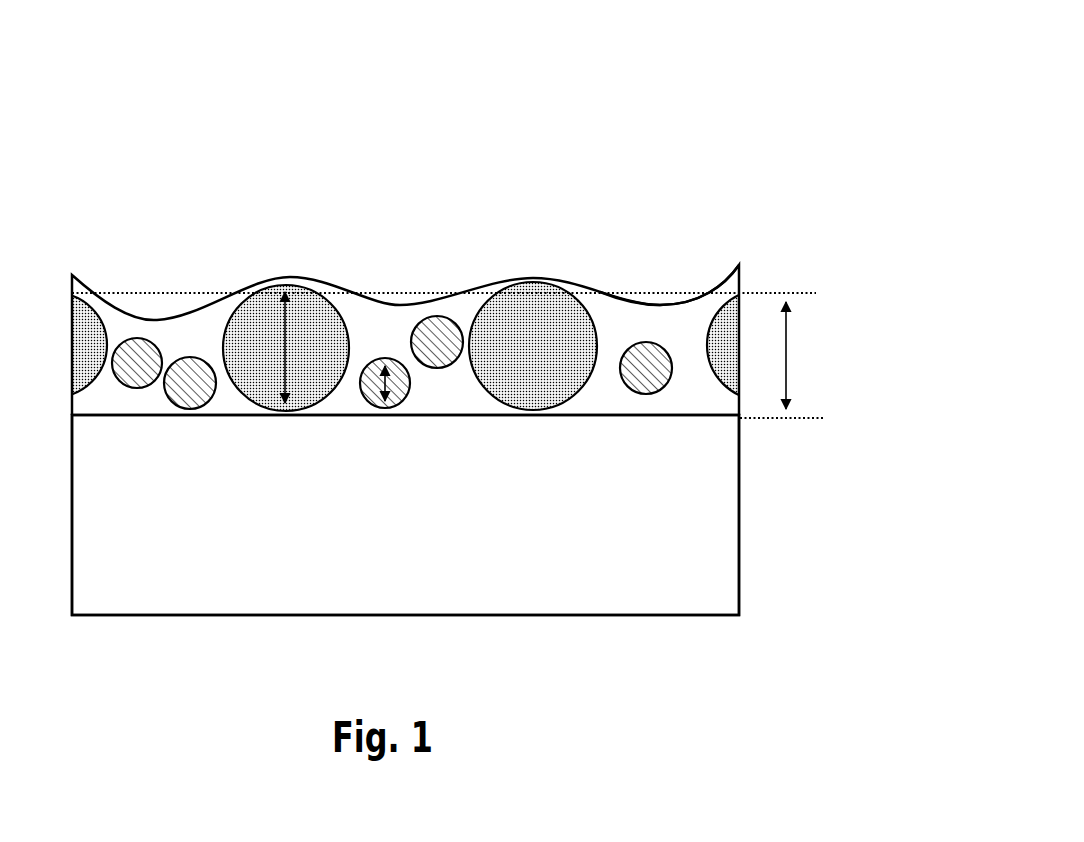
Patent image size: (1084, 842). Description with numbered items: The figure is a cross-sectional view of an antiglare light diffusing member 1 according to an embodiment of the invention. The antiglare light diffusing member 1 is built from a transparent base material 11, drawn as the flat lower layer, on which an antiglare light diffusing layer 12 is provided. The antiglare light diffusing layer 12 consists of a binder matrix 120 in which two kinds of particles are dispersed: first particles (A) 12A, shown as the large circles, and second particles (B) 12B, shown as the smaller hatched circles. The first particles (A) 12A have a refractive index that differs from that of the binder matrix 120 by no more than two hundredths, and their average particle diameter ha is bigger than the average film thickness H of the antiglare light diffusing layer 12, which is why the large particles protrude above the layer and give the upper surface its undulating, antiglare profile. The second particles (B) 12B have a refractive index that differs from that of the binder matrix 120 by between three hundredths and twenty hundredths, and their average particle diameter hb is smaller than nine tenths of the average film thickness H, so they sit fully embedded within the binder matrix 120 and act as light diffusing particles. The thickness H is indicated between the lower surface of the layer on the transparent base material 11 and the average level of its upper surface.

The antiglare light diffusing member 1 is at (697, 153).
The transparent base material 11 is at (693, 497).
The antiglare light diffusing layer 12 is at (847, 265).
The first particles (A) 12A is at (312, 340).
The second particles (B) 12B is at (437, 338).
The binder matrix 120 is at (622, 320).
The average particle diameter of the first particles (A) ha is at (277, 337).
The average particle diameter of the second particles (B) hb is at (380, 383).
The average film thickness of the antiglare light diffusing layer H is at (808, 355).